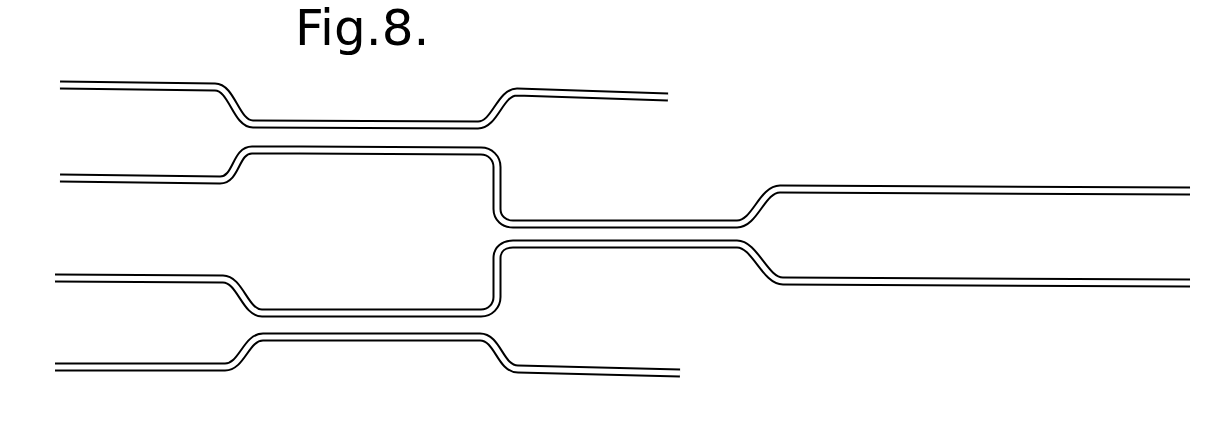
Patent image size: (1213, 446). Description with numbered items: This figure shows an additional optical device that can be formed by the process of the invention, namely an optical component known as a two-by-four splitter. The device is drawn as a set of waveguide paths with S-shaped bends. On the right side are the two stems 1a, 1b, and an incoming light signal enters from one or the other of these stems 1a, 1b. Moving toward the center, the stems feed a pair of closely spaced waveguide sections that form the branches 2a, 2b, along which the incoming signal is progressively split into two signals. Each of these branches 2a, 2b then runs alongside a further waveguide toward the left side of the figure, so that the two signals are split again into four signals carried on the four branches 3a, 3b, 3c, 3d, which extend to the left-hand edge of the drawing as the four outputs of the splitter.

The stem 1a is at (1006, 173).
The stem 1b is at (1019, 291).
The branch 2a is at (391, 161).
The branch 2b is at (404, 298).
The branch 3a is at (184, 74).
The branch 3b is at (192, 165).
The branch 3c is at (106, 382).
The branch 3d is at (110, 290).